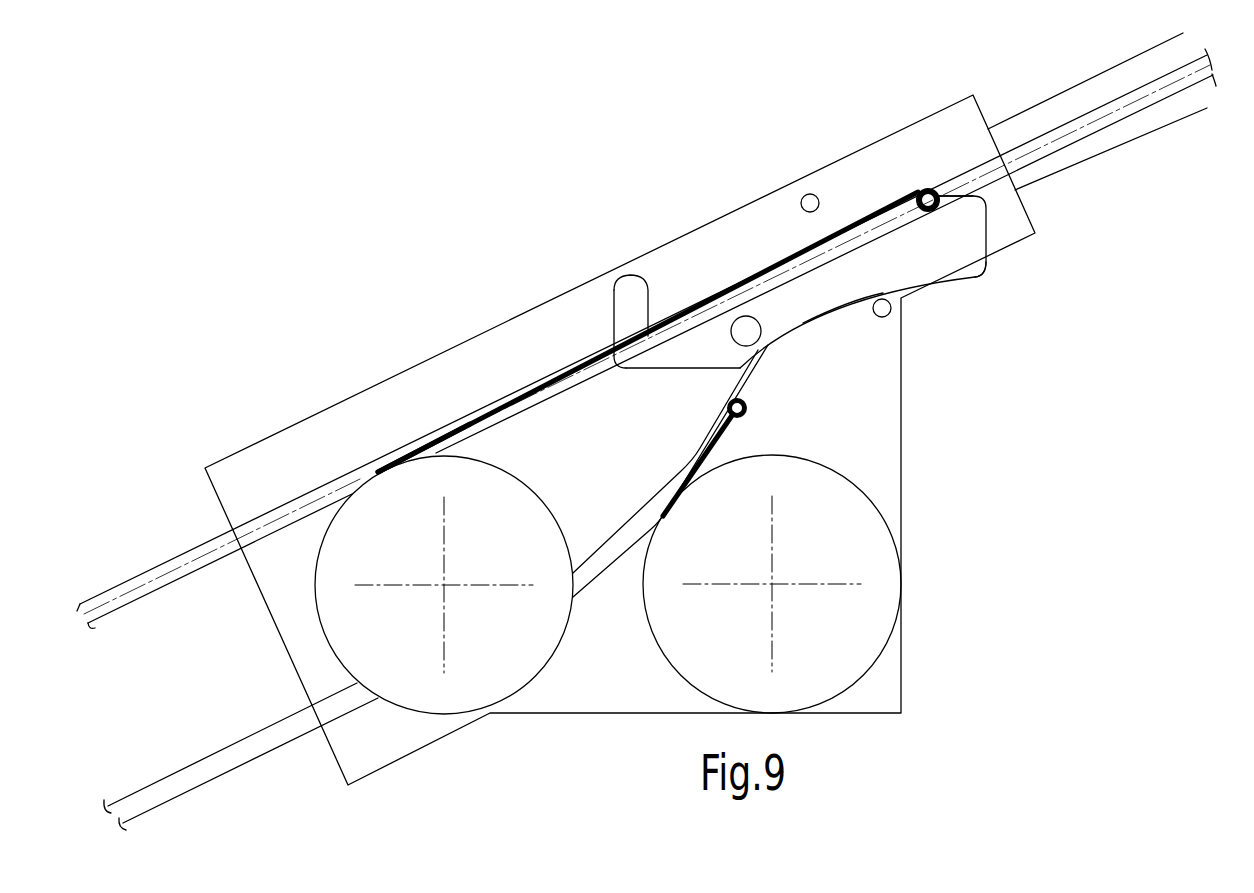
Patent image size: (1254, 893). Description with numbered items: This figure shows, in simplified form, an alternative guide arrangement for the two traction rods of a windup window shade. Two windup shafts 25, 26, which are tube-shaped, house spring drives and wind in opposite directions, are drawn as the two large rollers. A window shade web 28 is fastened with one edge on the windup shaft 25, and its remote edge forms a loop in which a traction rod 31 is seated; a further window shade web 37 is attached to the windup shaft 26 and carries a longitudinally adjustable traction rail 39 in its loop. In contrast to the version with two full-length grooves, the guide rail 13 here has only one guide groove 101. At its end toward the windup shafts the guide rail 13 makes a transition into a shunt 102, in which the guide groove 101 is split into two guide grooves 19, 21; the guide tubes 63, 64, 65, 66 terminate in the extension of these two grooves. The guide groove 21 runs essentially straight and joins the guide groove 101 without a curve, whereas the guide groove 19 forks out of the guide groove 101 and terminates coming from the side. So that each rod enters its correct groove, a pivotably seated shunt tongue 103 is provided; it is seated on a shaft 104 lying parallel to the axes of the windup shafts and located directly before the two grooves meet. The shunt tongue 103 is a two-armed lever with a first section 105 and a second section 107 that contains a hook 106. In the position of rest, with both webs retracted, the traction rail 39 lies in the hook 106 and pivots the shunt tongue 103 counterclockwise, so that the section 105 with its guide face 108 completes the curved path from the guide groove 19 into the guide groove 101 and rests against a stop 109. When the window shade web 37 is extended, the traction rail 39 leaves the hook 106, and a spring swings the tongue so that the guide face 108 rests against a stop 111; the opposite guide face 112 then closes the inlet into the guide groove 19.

The guide rail 13 is at (1163, 130).
The guide groove 19 is at (757, 374).
The guide groove 21 is at (523, 388).
The windup shaft 25 is at (858, 627).
The windup shaft 26 is at (470, 680).
The window shade web 28 is at (685, 463).
The traction rod 31 is at (752, 410).
The window shade web 37 is at (452, 425).
The traction rail 39 is at (927, 190).
The guide tube 63 is at (241, 762).
The guide tube 66 is at (240, 765).
The guide tube 64 is at (647, 374).
The guide tube 65 is at (183, 578).
The guide groove 101 is at (1092, 125).
The shunt 102 is at (528, 276).
The shunt tongue 103 is at (984, 271).
The shaft 104 is at (742, 335).
The first section 105 is at (905, 271).
The hook 106 is at (630, 290).
The second section 107 is at (637, 358).
The guide face 108 is at (840, 310).
The stop 109 is at (803, 195).
The stop 111 is at (888, 314).
The guide face 112 is at (887, 235).